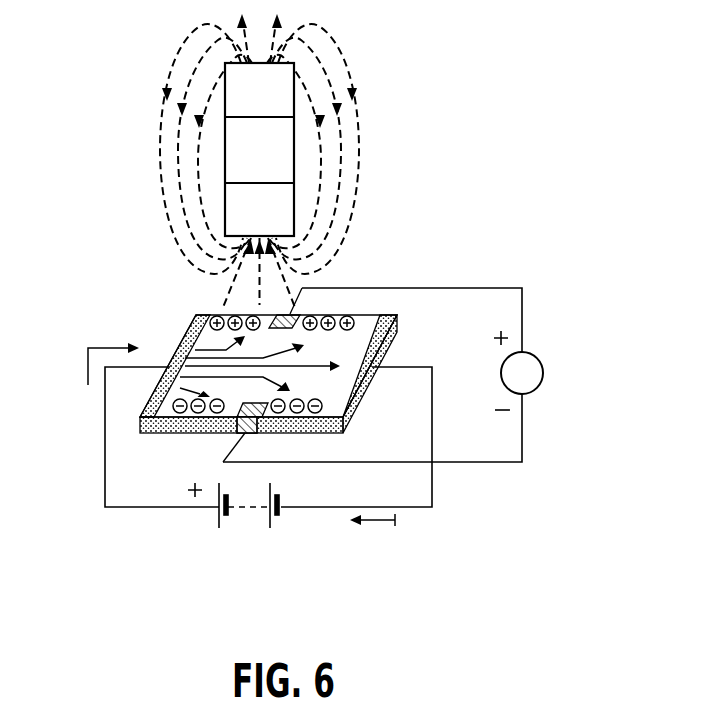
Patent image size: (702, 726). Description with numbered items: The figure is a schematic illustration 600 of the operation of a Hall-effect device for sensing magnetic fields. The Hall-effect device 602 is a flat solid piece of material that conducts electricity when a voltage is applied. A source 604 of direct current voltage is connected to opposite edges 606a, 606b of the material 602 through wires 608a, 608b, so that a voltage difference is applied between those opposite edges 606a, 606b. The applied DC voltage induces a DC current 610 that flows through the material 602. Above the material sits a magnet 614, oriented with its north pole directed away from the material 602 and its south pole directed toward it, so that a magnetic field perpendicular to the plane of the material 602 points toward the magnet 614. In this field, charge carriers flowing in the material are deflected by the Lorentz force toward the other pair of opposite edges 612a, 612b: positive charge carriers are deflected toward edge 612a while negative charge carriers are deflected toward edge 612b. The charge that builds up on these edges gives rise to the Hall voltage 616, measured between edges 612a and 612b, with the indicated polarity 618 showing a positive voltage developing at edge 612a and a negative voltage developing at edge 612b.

The schematic illustration 600 is at (488, 63).
The Hall-effect device 602 is at (236, 343).
The source of direct current voltage 604 is at (280, 508).
The edge 606a is at (150, 398).
The edge 606b is at (388, 345).
The wire 608a is at (105, 485).
The wire 608b is at (437, 490).
The DC current 610 is at (88, 360).
The edge 612a is at (337, 313).
The edge 612b is at (315, 433).
The magnet 614 is at (274, 160).
The Hall voltage 616 is at (545, 373).
The polarity 618 is at (505, 335).